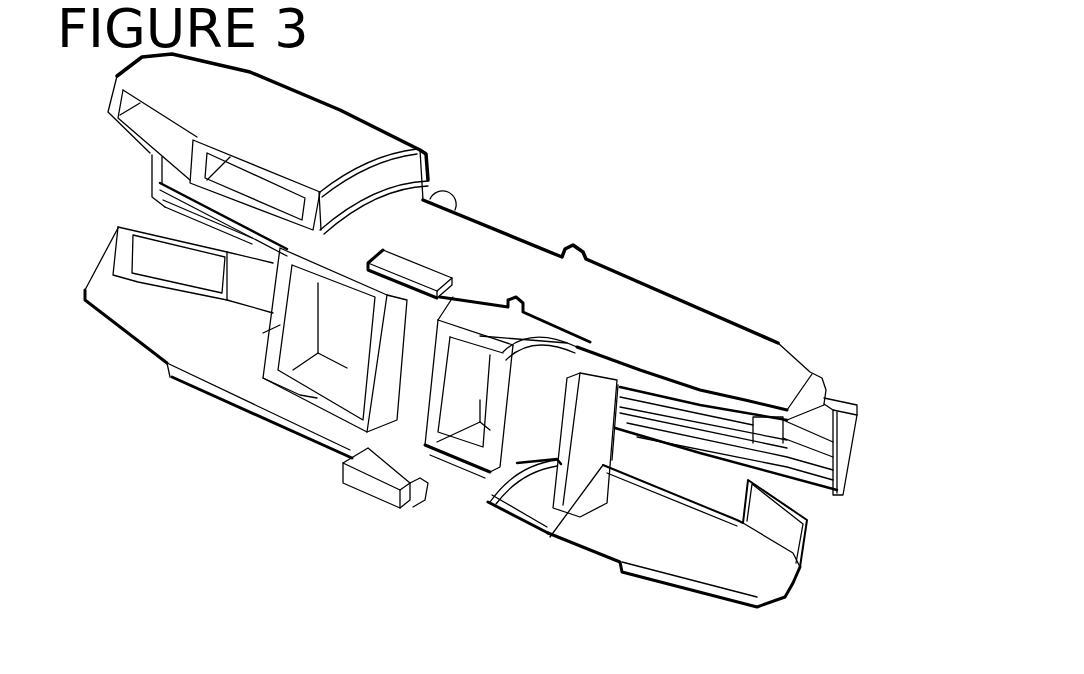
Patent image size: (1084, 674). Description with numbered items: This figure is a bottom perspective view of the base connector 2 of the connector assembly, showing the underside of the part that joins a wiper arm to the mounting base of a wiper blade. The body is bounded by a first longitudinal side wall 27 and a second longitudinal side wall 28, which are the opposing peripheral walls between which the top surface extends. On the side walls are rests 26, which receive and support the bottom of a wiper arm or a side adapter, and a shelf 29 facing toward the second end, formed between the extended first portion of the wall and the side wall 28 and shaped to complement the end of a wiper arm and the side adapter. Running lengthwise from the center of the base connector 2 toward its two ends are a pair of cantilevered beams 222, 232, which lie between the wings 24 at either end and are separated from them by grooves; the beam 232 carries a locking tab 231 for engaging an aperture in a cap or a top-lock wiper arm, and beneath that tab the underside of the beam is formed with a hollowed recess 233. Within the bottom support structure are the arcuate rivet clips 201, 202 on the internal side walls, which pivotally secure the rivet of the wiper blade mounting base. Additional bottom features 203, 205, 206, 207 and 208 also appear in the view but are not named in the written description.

The base connector 2 is at (687, 160).
The wings 24 is at (116, 98).
The rests 26 is at (440, 265).
The first longitudinal side wall 27 is at (282, 430).
The second longitudinal side wall 28 is at (438, 232).
The shelf 29 is at (385, 175).
The rivet clip 201 is at (403, 455).
The rivet clip 202 is at (576, 322).
The partition wall 203 is at (418, 463).
The first cavity 205 is at (302, 307).
The cavity side wall 206 is at (278, 373).
The cavity bottom wall 207 is at (317, 398).
The retaining step 208 is at (587, 262).
The cantilevered beam 222 is at (160, 197).
The locking tab 231 is at (860, 404).
The cantilevered beam 232 is at (787, 467).
The hollowed recess 233 is at (835, 440).